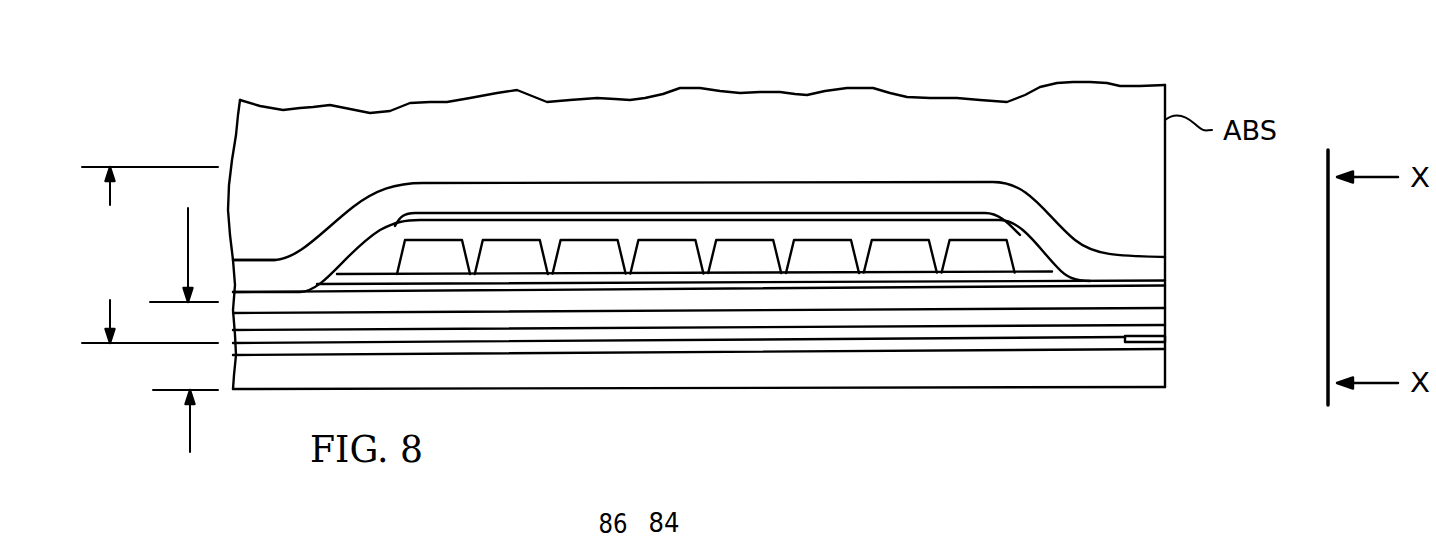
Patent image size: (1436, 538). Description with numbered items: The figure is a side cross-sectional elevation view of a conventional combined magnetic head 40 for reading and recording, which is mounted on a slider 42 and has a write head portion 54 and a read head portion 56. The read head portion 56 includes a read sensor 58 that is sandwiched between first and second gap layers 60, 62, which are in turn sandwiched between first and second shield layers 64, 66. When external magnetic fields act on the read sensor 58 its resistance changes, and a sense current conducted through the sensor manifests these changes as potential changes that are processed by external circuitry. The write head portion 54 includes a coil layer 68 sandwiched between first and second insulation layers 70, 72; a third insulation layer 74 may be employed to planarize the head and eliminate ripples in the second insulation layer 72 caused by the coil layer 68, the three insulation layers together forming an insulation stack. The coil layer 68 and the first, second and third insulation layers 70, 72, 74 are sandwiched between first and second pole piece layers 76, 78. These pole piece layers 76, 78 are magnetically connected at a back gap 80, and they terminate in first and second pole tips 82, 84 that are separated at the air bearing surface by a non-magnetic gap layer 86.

The magnetic head 40 is at (197, 67).
The slider 42 is at (702, 82).
The write head portion 54 is at (143, 255).
The read head portion 56 is at (184, 464).
The read sensor 58 is at (1162, 337).
The first gap layer 60 is at (703, 355).
The second gap layer 62 is at (637, 327).
The first shield layer 64 is at (847, 365).
The second shield layer 66 is at (679, 402).
The coil layer 68 is at (670, 252).
The first insulation layer 70 is at (741, 373).
The second insulation layer 72 is at (661, 203).
The third insulation layer 74 is at (707, 180).
The first pole piece layer 76 is at (699, 389).
The second pole piece layer 78 is at (699, 182).
The back gap 80 is at (259, 217).
The first pole tip 82 is at (1160, 298).
The second pole tip 84 is at (1152, 272).
The non-magnetic gap layer 86 is at (1165, 286).